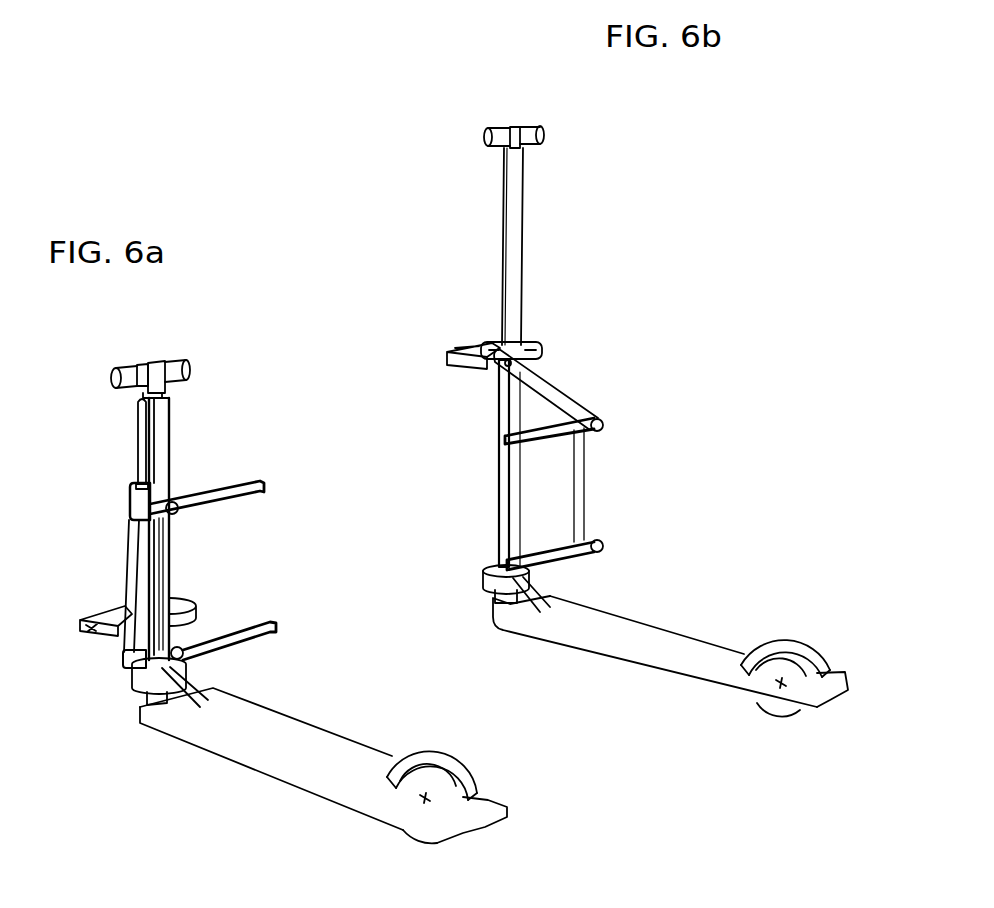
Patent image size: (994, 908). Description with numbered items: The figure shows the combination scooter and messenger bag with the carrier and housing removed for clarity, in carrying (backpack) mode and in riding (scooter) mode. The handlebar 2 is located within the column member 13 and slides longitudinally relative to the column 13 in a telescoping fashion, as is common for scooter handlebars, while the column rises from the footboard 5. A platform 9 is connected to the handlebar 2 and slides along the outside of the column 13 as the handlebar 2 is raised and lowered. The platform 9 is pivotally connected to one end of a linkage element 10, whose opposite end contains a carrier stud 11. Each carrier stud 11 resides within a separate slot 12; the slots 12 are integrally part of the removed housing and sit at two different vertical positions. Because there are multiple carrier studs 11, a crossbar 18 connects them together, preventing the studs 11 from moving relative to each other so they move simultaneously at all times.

In FIG. 6a, the handlebar 2 is at (162, 367).
In FIG. 6b, the handlebar 2 is at (510, 197).
In FIG. 6a, the footboard 5 is at (335, 757).
In FIG. 6b, the footboard 5 is at (648, 643).
In FIG. 6a, the platform 9 is at (100, 618).
In FIG. 6b, the platform 9 is at (475, 350).
In FIG. 6a, the linkage element 10 is at (136, 575).
In FIG. 6b, the linkage element 10 is at (543, 393).
In FIG. 6a, the carrier stud 11 is at (133, 505).
In FIG. 6b, the carrier stud 11 is at (603, 425).
In FIG. 6a, the slot 12 is at (259, 618).
In FIG. 6b, the slot 12 is at (510, 560).
In FIG. 6a, the column member 13 is at (162, 427).
In FIG. 6b, the column member 13 is at (510, 413).
In FIG. 6a, the crossbar 18 is at (162, 563).
In FIG. 6b, the crossbar 18 is at (583, 496).